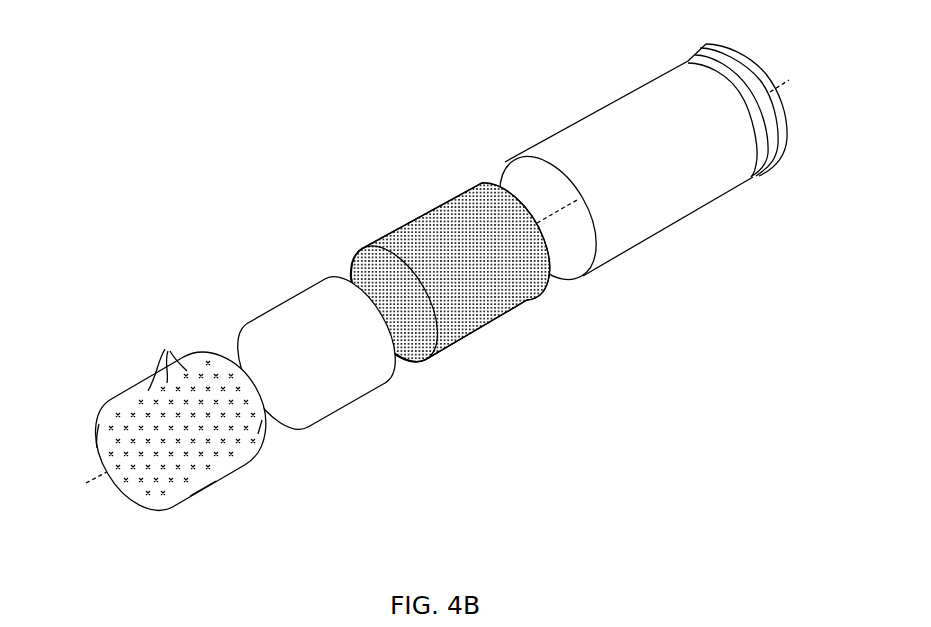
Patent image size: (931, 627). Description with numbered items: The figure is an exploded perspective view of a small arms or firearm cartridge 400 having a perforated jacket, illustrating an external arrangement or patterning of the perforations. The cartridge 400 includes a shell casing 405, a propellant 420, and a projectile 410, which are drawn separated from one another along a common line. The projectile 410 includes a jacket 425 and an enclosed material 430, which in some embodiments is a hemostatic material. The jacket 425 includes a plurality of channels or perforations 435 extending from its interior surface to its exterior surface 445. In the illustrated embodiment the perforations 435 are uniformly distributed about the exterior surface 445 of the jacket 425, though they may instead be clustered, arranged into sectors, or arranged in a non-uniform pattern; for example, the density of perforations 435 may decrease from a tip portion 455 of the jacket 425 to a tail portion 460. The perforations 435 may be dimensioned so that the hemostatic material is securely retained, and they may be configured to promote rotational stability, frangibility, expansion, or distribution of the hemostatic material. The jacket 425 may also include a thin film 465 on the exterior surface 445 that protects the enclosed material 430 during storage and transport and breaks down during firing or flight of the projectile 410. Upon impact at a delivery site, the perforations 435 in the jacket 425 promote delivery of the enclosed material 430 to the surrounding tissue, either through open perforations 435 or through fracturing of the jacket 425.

The cartridge 400 is at (263, 90).
The shell casing 405 is at (543, 141).
The projectile 410 is at (212, 230).
The propellant 420 is at (415, 223).
The jacket 425 is at (136, 381).
The enclosed material 430 is at (283, 302).
The perforations 435 is at (166, 350).
The exterior surface 445 is at (204, 492).
The tip portion 455 is at (110, 492).
The tail portion 460 is at (275, 436).
The thin film 465 is at (102, 428).